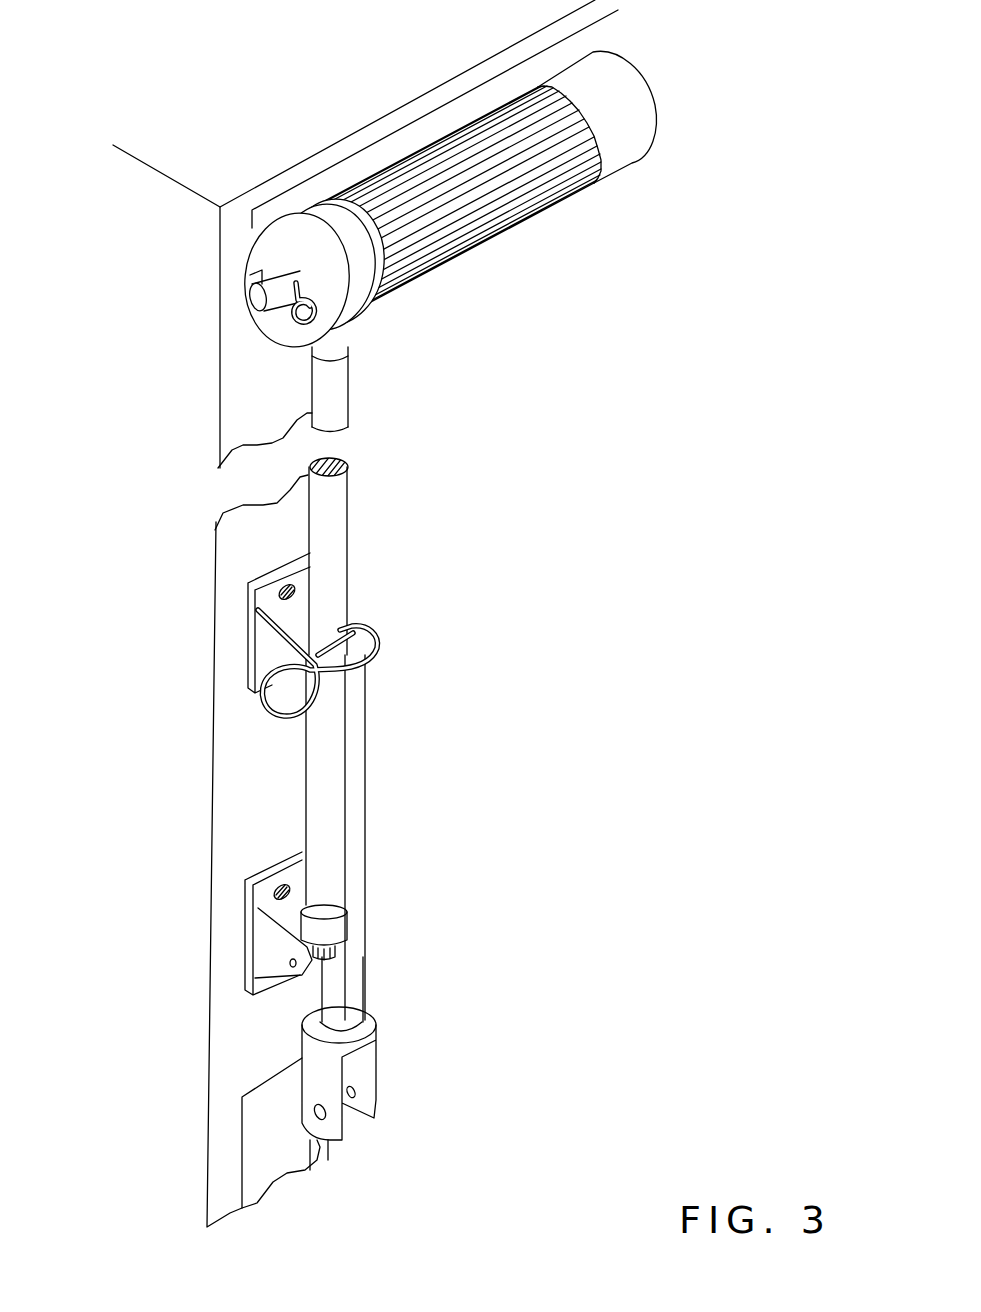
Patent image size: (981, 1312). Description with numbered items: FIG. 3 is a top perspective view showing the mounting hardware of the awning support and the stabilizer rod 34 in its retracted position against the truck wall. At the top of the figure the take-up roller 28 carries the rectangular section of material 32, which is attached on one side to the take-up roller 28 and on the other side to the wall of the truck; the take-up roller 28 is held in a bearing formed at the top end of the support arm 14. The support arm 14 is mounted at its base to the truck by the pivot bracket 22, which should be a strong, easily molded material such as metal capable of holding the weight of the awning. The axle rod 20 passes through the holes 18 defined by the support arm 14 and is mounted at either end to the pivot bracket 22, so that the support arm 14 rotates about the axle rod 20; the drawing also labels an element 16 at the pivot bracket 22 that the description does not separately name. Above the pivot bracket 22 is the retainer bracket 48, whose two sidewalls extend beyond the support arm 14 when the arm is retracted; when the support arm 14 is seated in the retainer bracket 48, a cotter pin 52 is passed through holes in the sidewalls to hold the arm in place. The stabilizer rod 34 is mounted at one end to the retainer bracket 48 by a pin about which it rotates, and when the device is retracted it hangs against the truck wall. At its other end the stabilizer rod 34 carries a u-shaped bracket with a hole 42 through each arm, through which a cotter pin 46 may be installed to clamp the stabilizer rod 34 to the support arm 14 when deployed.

The support arm 14 is at (349, 503).
The bracket arm 16 is at (243, 910).
The holes 18 is at (315, 950).
The axle rod 20 is at (318, 953).
The pivot bracket 22 is at (260, 938).
The take-up roller 28 is at (257, 303).
The rectangular section of material 32 is at (623, 173).
The stabilizer rod 34 is at (366, 777).
The hole 42 is at (355, 1097).
The cotter pin 46 is at (305, 330).
The retainer bracket 48 is at (263, 637).
The cotter pin 52 is at (275, 715).